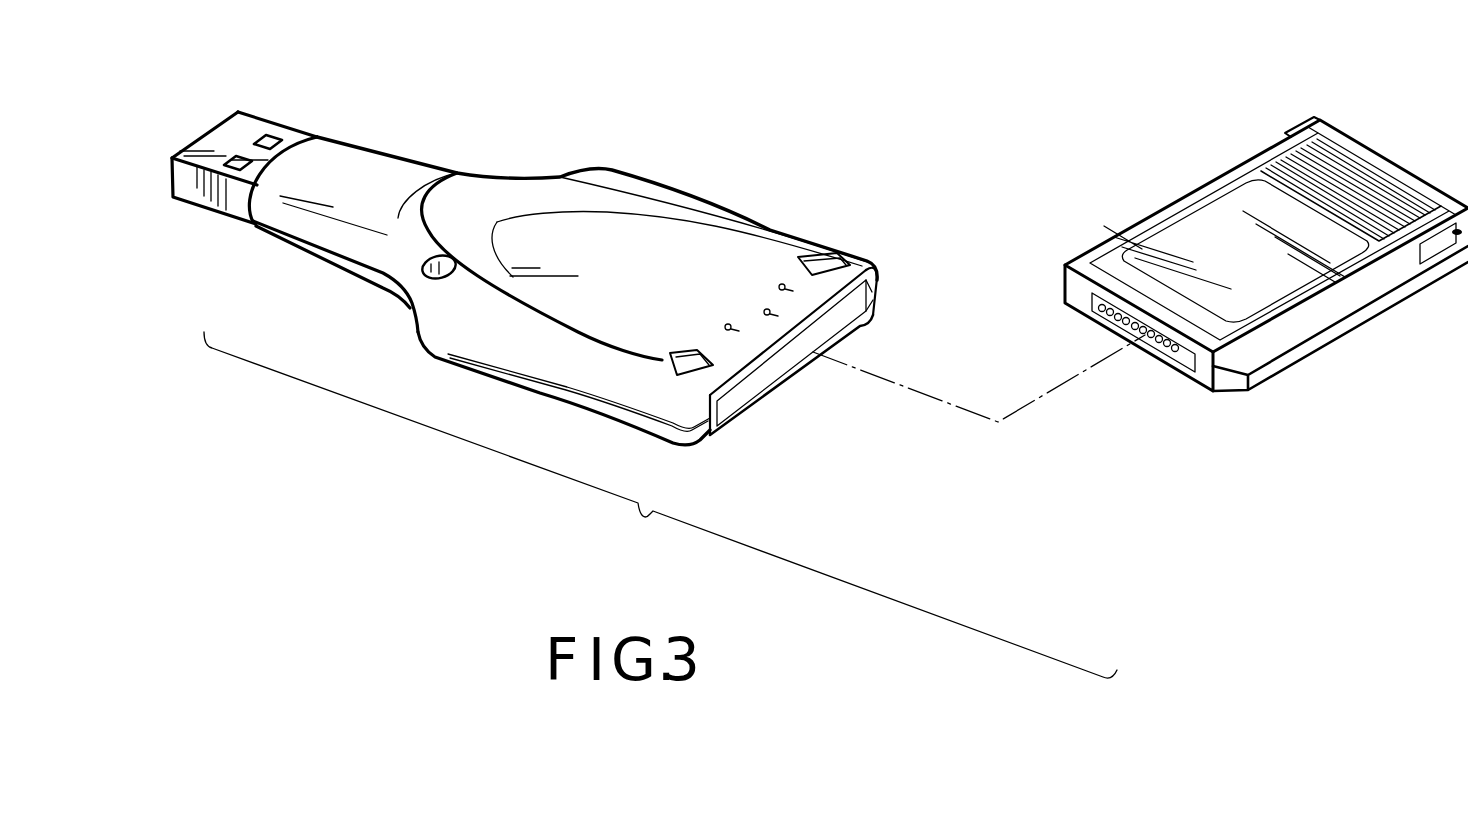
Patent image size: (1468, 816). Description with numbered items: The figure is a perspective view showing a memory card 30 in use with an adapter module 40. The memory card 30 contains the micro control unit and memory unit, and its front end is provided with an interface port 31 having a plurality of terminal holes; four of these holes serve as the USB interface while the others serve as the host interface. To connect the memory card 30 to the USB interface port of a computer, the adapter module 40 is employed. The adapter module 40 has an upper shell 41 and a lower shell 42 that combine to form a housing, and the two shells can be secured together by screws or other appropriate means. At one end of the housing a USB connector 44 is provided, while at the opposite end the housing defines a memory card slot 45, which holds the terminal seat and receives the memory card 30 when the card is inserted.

The memory card 30 is at (1342, 322).
The interface port 31 is at (1160, 347).
The adapter module 40 is at (708, 158).
The upper shell 41 is at (740, 217).
The lower shell 42 is at (618, 417).
The USB connector 44 is at (250, 128).
The memory card slot 45 is at (797, 371).